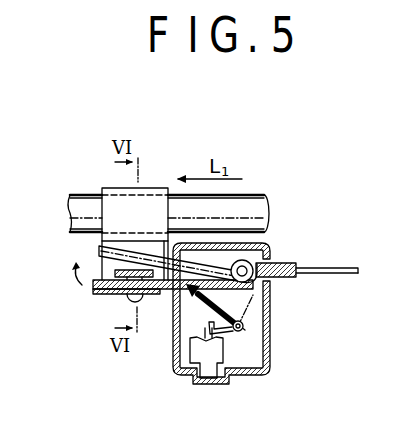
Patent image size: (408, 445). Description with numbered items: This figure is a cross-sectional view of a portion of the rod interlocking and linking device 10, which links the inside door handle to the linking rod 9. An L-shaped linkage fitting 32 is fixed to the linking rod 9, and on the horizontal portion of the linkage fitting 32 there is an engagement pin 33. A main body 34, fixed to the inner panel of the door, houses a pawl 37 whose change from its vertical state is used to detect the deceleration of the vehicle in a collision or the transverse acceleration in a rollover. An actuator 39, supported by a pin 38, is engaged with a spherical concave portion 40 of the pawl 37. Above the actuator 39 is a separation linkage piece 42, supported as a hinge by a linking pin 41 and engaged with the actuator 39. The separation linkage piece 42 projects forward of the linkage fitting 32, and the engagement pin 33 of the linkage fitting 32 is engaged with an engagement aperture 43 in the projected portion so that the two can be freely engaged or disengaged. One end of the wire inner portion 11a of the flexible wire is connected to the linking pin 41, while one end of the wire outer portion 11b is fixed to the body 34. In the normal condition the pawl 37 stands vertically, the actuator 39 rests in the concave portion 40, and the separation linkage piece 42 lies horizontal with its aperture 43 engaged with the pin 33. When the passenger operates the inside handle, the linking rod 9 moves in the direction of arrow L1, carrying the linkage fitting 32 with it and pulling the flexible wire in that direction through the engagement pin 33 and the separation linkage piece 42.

The linking rod 9 is at (262, 195).
The rod interlocking and linking device 10 is at (262, 302).
The wire inner portion 11a is at (337, 268).
The wire outer portion 11b is at (295, 280).
The linkage fitting 32 is at (112, 188).
The engagement pin 33 is at (99, 251).
The main body 34 is at (268, 372).
The pawl 37 is at (228, 347).
The pin 38 is at (246, 331).
The actuator 39 is at (247, 316).
The spherical concave portion 40 is at (192, 337).
The linking pin 41 is at (272, 300).
The separation linkage piece 42 is at (210, 284).
The engagement aperture 43 is at (116, 295).